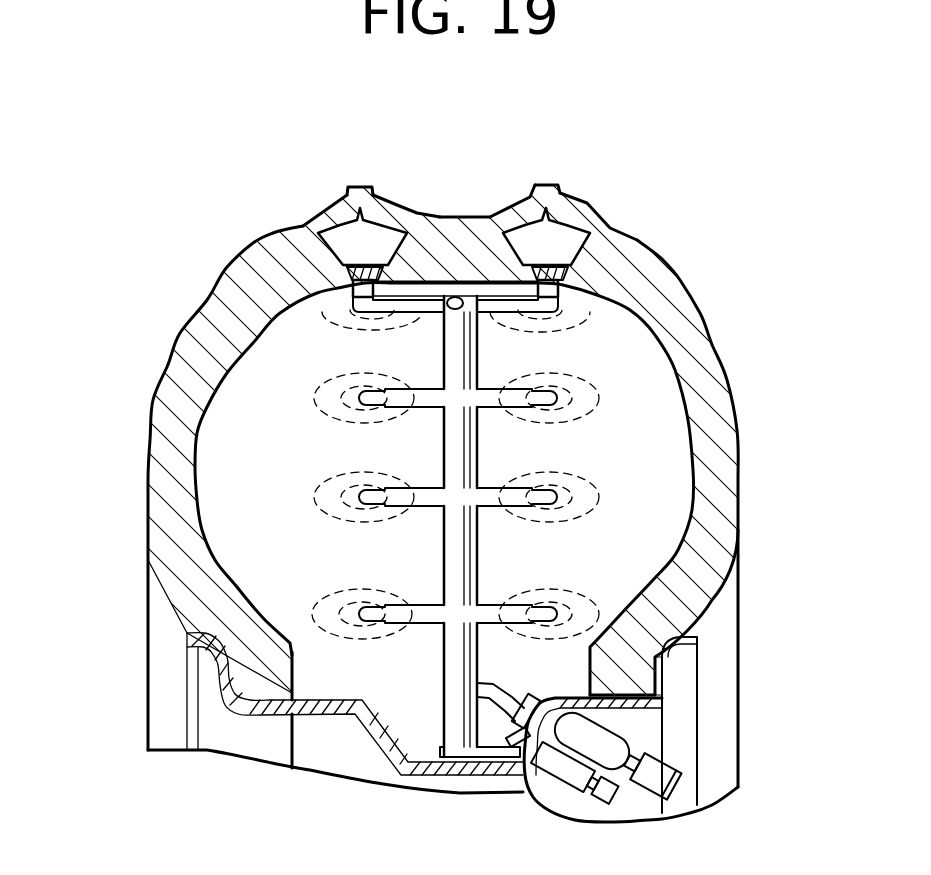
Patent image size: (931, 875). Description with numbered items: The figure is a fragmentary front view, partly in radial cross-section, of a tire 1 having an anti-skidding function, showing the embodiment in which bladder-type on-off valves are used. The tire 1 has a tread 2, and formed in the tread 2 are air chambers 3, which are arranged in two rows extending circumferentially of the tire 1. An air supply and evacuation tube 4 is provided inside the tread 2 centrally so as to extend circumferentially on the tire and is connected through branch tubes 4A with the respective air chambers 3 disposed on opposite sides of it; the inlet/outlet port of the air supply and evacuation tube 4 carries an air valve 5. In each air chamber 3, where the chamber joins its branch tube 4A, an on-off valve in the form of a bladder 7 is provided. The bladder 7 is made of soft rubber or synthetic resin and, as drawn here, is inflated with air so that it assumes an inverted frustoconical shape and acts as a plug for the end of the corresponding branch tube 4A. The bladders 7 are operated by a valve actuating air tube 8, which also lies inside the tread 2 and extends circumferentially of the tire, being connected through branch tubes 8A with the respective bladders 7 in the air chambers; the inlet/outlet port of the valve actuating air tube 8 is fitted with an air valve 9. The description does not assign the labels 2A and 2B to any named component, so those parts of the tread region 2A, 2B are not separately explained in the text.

The tire 1 is at (742, 434).
The tread 2 is at (455, 237).
The boss 2A is at (318, 216).
The projection 2B is at (357, 187).
The air chamber 3 is at (370, 247).
The air supply and evacuation tube 4 is at (455, 455).
The branch tube 4A is at (430, 285).
The air valve 5 is at (597, 747).
The bladder 7 is at (350, 267).
The valve actuating air tube 8 is at (477, 348).
The branch tube 8A is at (437, 283).
The air valve 9 is at (568, 772).